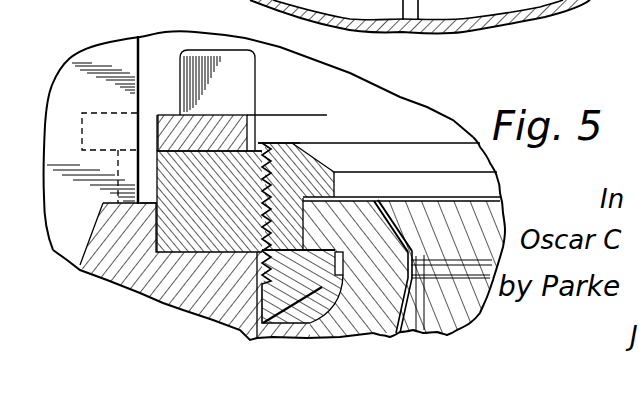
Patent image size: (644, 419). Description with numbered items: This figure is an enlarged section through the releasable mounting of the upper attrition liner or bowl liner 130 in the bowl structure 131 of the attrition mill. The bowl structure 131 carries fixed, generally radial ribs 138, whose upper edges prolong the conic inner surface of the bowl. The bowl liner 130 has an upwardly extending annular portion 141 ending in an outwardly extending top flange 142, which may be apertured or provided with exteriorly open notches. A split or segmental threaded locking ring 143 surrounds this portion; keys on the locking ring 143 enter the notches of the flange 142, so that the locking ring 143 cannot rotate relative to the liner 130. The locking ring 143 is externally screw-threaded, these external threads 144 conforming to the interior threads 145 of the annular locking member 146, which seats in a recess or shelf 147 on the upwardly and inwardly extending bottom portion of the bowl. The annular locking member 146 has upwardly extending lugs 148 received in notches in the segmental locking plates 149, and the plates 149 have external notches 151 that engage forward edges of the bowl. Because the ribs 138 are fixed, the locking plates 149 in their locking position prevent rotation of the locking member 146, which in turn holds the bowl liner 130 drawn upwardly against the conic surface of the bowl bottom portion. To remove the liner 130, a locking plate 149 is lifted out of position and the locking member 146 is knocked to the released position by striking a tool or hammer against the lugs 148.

The upper attrition liner or bowl liner 130 is at (453, 332).
The bowl structure 131 is at (67, 259).
The radial ribs 138 is at (138, 53).
The upwardly extending annular portion 141 is at (397, 233).
The top flange 142 is at (327, 230).
The threaded locking ring 143 is at (297, 163).
The external screw threads 144 is at (250, 282).
The interior threads 145 is at (278, 148).
The annular locking member 146 is at (180, 240).
The recess or shelf 147 is at (187, 258).
The upwardly extending lugs 148 is at (247, 80).
The segmental locking plates 149 is at (220, 108).
The external notches 151 is at (150, 124).